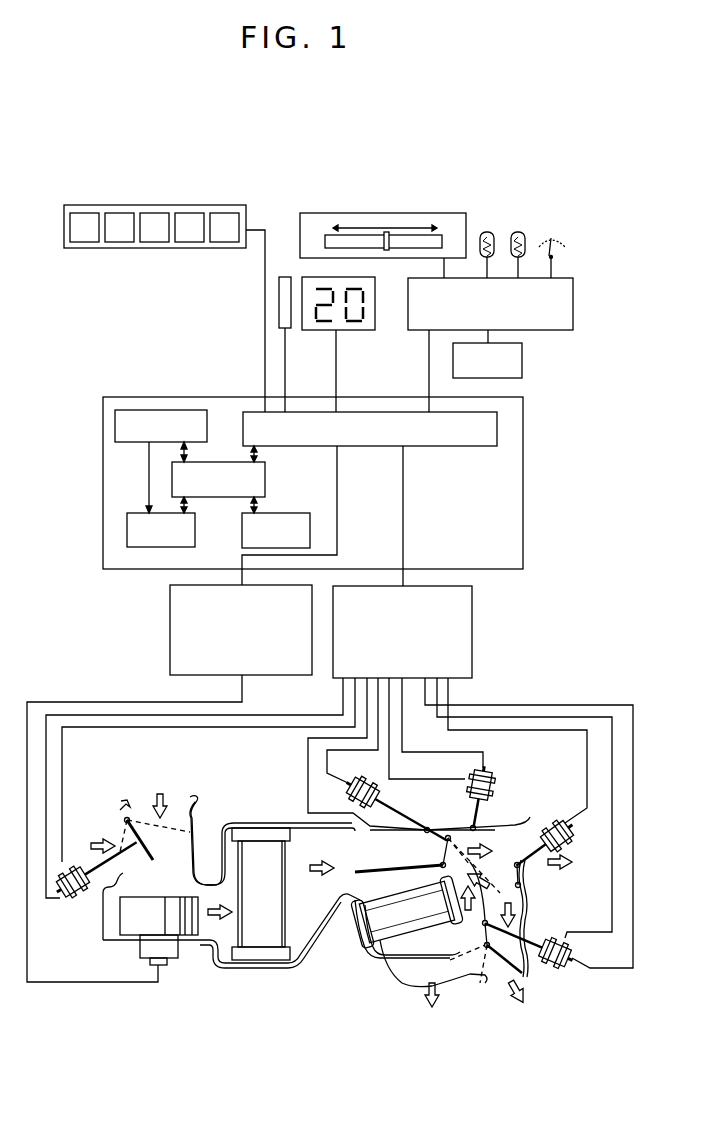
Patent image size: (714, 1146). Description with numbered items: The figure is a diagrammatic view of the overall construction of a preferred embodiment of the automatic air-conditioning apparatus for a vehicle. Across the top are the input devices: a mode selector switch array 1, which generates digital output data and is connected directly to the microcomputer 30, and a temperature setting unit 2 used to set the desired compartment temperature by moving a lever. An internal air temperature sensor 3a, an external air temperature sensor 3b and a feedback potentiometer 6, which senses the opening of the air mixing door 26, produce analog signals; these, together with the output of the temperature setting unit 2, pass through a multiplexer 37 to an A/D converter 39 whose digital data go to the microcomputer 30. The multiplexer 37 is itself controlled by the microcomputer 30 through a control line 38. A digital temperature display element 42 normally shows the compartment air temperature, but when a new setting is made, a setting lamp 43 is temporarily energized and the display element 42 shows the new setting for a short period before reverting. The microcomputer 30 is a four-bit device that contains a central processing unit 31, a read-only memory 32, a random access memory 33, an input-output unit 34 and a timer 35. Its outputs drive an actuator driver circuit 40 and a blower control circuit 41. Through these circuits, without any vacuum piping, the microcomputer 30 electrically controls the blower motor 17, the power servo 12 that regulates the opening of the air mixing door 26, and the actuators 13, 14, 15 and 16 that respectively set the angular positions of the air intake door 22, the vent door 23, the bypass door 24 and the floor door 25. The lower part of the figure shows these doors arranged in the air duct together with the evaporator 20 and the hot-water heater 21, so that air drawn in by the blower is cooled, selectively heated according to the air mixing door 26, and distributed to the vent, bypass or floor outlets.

The mode selector switch array 1 is at (147, 205).
The temperature setting unit 2 is at (384, 213).
The internal air temperature sensor 3a is at (490, 232).
The external air temperature sensor 3b is at (523, 232).
The feedback potentiometer 6 is at (552, 232).
The multiplexer 37 is at (573, 300).
The control line 38 is at (428, 363).
The A/D converter 39 is at (522, 361).
The digital temperature display element 42 is at (317, 331).
The temperature setting status indicator 43 is at (279, 318).
The microcomputer 30 is at (523, 508).
The central processing unit 31 is at (226, 462).
The read-only memory 32 is at (288, 494).
The random access memory 33 is at (127, 522).
The input-output unit 34 is at (466, 447).
The timer 35 is at (148, 410).
The actuator driver circuit 40 is at (472, 642).
The blower control circuit 41 is at (170, 640).
The power servo 12 is at (380, 790).
The actuator 13 is at (76, 902).
The actuator 14 is at (497, 787).
The actuator 15 is at (553, 828).
The actuator 16 is at (560, 972).
The blower motor 17 is at (176, 960).
The evaporator 20 is at (267, 960).
The hot-water heater 21 is at (400, 975).
The air intake door 22 is at (223, 839).
The vent door 23 is at (496, 806).
The bypass door 24 is at (522, 877).
The floor door 25 is at (503, 962).
The air mixing door 26 is at (390, 868).